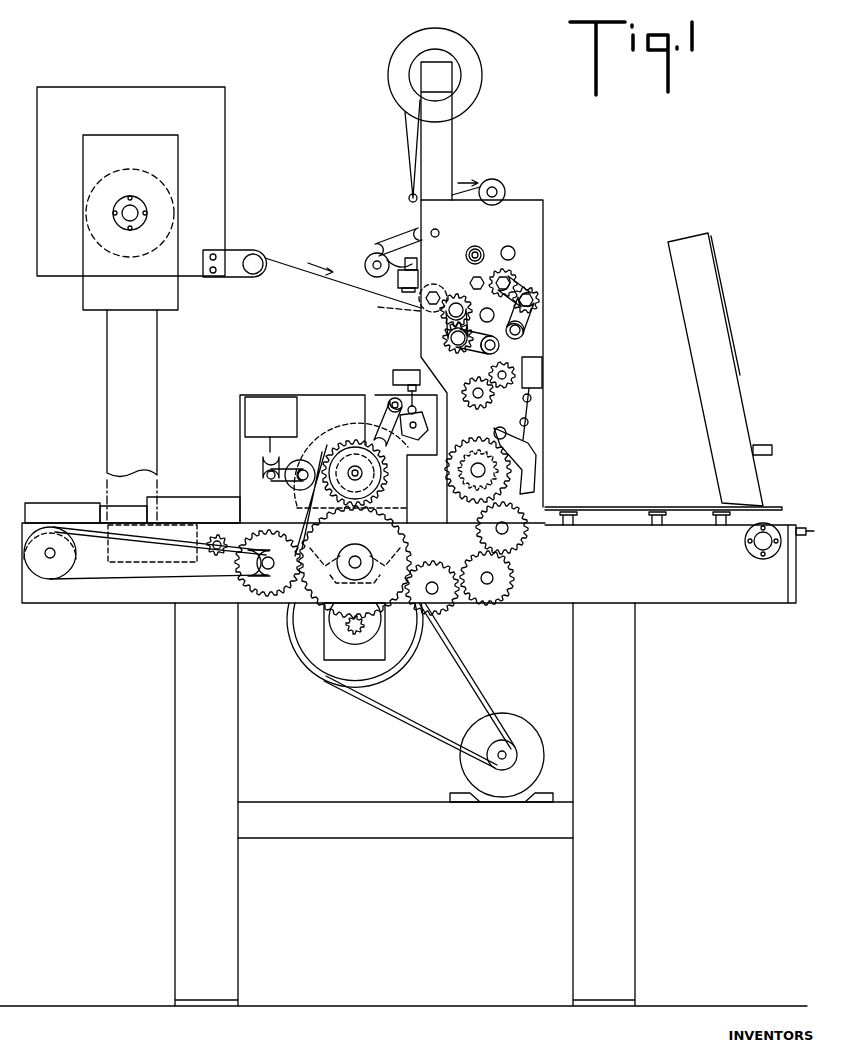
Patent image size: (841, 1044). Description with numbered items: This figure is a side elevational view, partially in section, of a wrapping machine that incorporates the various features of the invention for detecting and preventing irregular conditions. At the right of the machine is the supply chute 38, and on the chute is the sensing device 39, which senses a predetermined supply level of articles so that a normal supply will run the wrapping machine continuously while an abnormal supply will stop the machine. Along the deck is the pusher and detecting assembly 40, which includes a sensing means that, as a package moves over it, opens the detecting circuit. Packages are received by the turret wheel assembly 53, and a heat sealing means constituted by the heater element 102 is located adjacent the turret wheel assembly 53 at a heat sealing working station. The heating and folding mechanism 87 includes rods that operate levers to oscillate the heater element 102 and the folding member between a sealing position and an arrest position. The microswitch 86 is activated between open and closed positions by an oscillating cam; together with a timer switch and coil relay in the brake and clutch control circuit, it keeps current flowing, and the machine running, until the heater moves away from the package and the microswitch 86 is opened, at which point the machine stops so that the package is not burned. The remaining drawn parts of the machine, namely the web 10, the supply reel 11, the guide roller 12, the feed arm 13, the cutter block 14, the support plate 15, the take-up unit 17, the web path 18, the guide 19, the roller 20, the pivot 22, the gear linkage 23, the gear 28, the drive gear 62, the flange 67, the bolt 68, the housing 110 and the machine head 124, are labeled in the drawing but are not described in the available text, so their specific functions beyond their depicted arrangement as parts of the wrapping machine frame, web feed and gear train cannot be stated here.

The web 10 is at (478, 183).
The supply reel 11 is at (470, 55).
The guide roller 12 is at (508, 191).
The feed arm 13 is at (366, 262).
The cutter block 14 is at (416, 279).
The support plate 15 is at (208, 505).
The take-up unit 17 is at (250, 142).
The web path 18 is at (323, 281).
The guide 19 is at (382, 307).
The roller 20 is at (440, 311).
The pivot 22 is at (480, 278).
The gear linkage 23 is at (512, 278).
The gear 28 is at (488, 360).
The supply chute 38 is at (717, 318).
The sensing device 39 is at (764, 447).
The pusher and detecting assembly 40 is at (677, 492).
The turret wheel assembly 53 is at (427, 507).
The drive gear 62 is at (508, 618).
The flange 67 is at (810, 526).
The bolt 68 is at (800, 540).
The microswitch 86 is at (403, 368).
The heating and folding mechanism 87 is at (347, 442).
The heater element 102 is at (384, 380).
The housing 110 is at (304, 378).
The machine head 124 is at (492, 138).